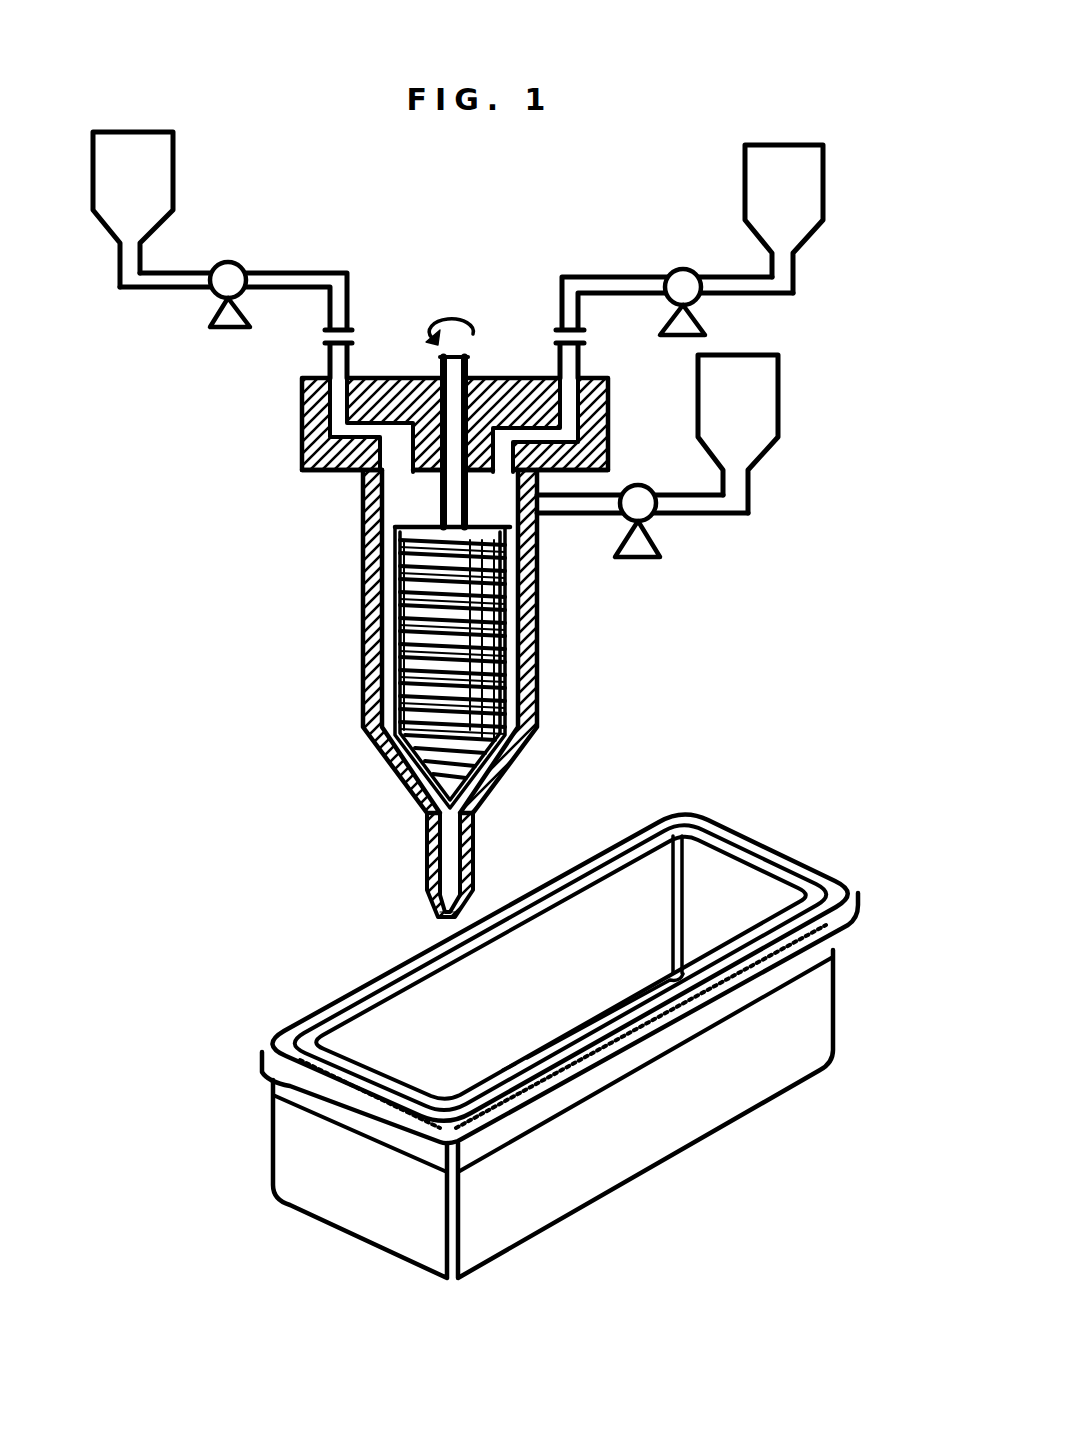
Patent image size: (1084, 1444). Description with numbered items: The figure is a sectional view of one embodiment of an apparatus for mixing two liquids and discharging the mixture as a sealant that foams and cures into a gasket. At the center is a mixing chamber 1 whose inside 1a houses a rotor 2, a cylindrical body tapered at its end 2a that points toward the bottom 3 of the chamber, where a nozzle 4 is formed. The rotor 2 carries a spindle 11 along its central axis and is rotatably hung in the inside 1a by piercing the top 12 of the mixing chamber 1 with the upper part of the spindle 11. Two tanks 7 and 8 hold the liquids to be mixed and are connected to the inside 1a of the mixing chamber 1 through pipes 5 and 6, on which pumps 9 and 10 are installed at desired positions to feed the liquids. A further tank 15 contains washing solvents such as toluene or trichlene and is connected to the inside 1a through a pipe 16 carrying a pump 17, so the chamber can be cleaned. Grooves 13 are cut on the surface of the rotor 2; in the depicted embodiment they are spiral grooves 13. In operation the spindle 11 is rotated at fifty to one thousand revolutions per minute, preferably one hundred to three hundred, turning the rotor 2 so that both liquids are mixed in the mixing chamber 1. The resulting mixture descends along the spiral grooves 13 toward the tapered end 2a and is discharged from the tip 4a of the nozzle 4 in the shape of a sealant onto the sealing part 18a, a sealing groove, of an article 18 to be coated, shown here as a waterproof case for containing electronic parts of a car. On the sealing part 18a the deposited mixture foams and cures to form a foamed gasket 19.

The mixing chamber 1 is at (538, 652).
The inside of the mixing chamber 1a is at (405, 503).
The rotor 2 is at (512, 600).
The end of the rotor 2a is at (430, 798).
The bottom of the mixing chamber 3 is at (444, 861).
The nozzle 4 is at (427, 858).
The tip of the nozzle 4a is at (442, 920).
The pipe 5 is at (320, 283).
The pipe 6 is at (590, 285).
The tank 7 is at (152, 153).
The tank 8 is at (806, 162).
The pump 9 is at (230, 280).
The pump 10 is at (683, 287).
The spindle 11 is at (468, 370).
The top of the mixing chamber 12 is at (610, 404).
The grooves 13 is at (408, 673).
The tank 15 is at (765, 380).
The pipe 16 is at (740, 495).
The pump 17 is at (643, 505).
The article to be coated 18 is at (560, 1021).
The sealing part 18a is at (760, 850).
The foamed gasket 19 is at (602, 1050).